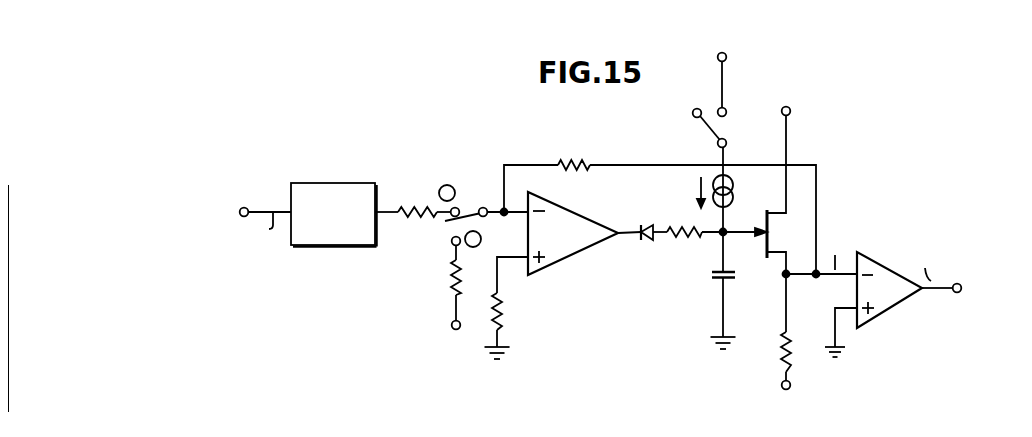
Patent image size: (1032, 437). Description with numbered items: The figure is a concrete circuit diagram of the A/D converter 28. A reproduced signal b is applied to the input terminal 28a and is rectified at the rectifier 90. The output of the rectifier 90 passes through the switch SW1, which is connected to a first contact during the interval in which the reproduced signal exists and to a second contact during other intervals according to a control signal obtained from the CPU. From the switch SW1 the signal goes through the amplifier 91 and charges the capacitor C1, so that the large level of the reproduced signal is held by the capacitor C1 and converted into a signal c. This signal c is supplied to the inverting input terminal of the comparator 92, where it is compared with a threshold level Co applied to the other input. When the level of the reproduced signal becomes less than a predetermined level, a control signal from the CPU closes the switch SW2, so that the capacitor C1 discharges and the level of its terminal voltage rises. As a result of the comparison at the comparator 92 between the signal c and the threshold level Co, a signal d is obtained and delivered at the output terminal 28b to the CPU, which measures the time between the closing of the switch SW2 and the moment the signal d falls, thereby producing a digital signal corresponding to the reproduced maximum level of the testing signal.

The A/D converter 28 is at (429, 140).
The terminal 28a is at (245, 207).
The output terminal 28b is at (947, 263).
The rectifier 90 is at (330, 183).
The amplifier 91 is at (567, 263).
The comparator 92 is at (883, 262).
The switch SW1 is at (467, 202).
The switch SW2 is at (708, 125).
The capacitor C1 is at (710, 290).
The threshold level Co is at (838, 333).